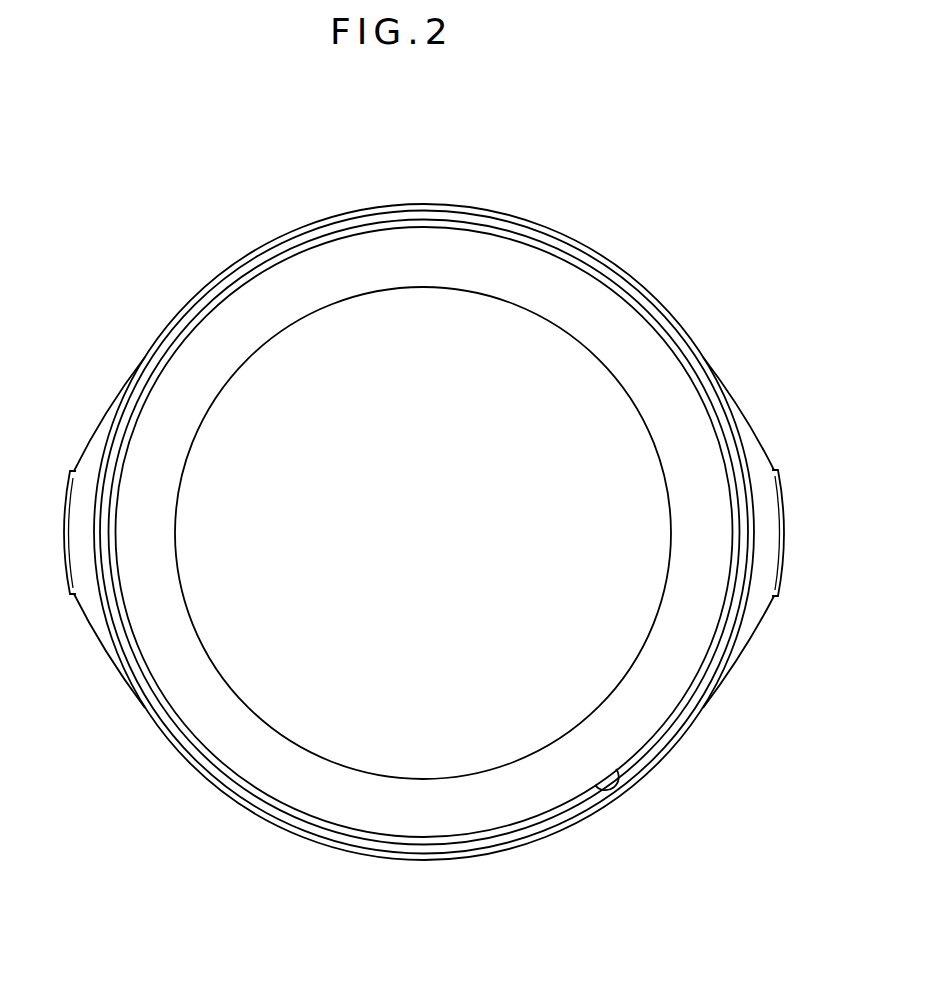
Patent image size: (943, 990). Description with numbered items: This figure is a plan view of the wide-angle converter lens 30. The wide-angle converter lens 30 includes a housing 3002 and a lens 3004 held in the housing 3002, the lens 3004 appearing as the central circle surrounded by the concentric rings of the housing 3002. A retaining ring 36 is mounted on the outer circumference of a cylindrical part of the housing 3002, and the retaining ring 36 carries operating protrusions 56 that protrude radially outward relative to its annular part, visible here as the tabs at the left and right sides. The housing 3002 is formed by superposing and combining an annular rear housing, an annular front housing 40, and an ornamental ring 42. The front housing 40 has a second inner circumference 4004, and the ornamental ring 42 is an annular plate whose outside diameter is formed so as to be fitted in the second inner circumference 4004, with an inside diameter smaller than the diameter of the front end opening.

The wide-angle converter lens 30 is at (402, 188).
The housing 3002 is at (543, 222).
The lens 3004 is at (575, 353).
The retaining ring 36 is at (103, 433).
The front housing 40 is at (430, 860).
The ornamental ring 42 is at (513, 800).
The second inner circumference 4004 is at (621, 779).
The operating protrusions 56 is at (760, 480).